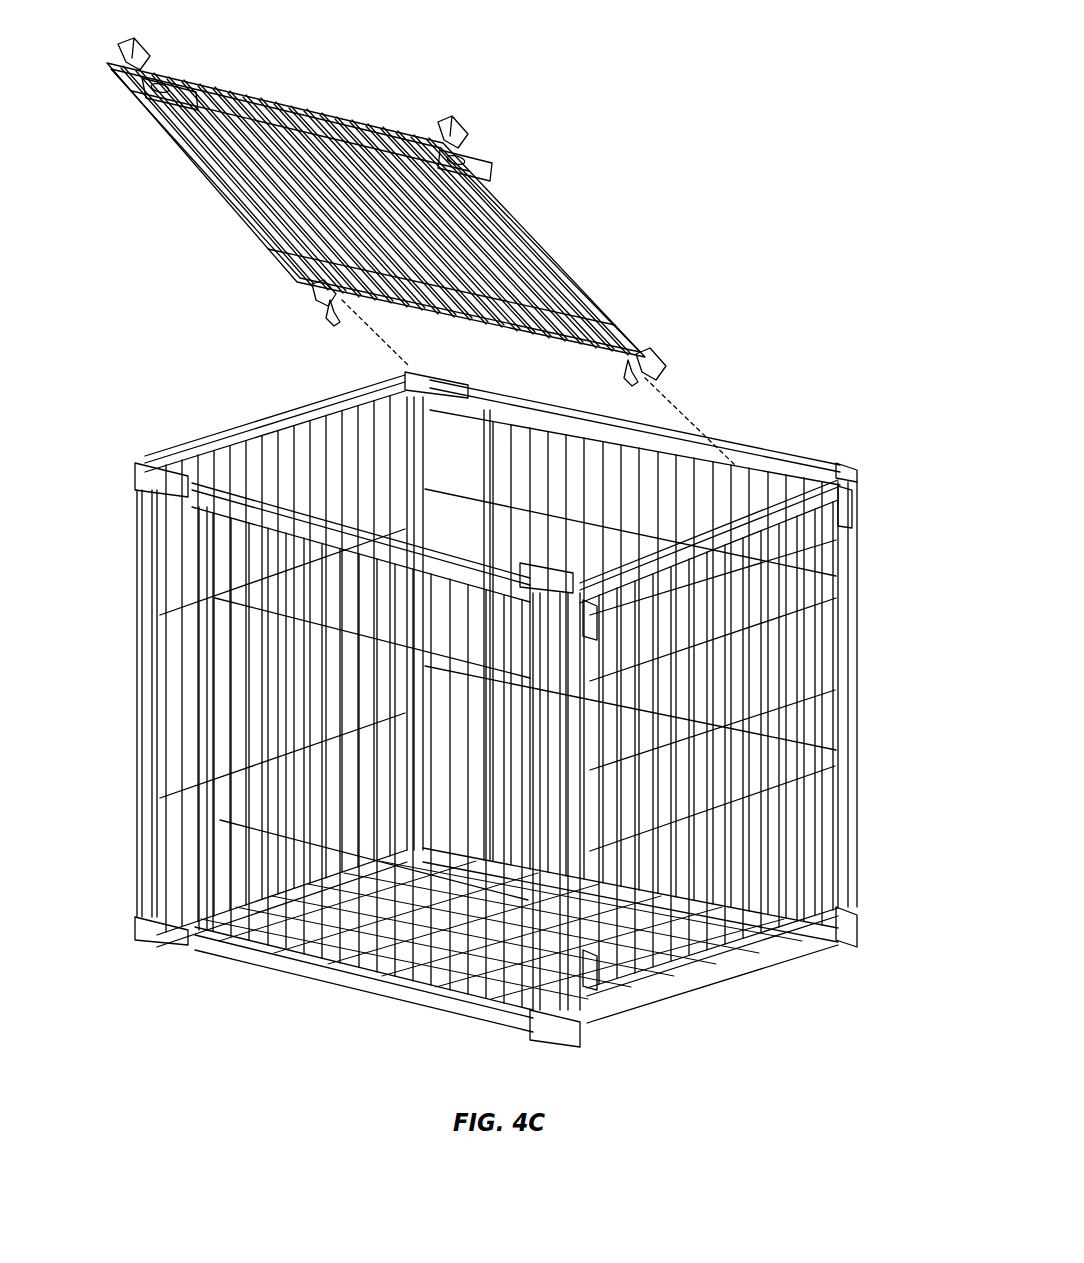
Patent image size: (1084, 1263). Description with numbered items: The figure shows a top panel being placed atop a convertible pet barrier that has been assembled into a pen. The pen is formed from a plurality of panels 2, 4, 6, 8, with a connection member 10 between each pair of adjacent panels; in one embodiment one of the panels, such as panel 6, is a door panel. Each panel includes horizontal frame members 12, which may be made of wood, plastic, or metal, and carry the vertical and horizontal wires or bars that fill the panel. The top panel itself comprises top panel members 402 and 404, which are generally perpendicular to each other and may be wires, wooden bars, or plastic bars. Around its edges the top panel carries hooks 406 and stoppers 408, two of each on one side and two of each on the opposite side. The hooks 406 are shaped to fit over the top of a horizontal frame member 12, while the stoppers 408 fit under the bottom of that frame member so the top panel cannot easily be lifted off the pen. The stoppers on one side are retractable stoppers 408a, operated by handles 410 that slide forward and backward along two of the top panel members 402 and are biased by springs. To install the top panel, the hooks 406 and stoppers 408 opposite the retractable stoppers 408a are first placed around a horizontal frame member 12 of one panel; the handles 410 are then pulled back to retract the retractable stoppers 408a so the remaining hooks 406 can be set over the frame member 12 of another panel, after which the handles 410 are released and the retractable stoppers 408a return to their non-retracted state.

The panel 2 is at (263, 420).
The panel 4 is at (757, 450).
The panel 6 is at (722, 990).
The panel 8 is at (335, 987).
The connection member 10 is at (447, 372).
The horizontal frame member 12 is at (225, 500).
The top panel member 402 is at (228, 173).
The top panel member 404 is at (197, 133).
The hook 406 is at (125, 46).
The stopper 408 is at (334, 320).
The retractable stopper 408a is at (155, 84).
The handle 410 is at (150, 93).